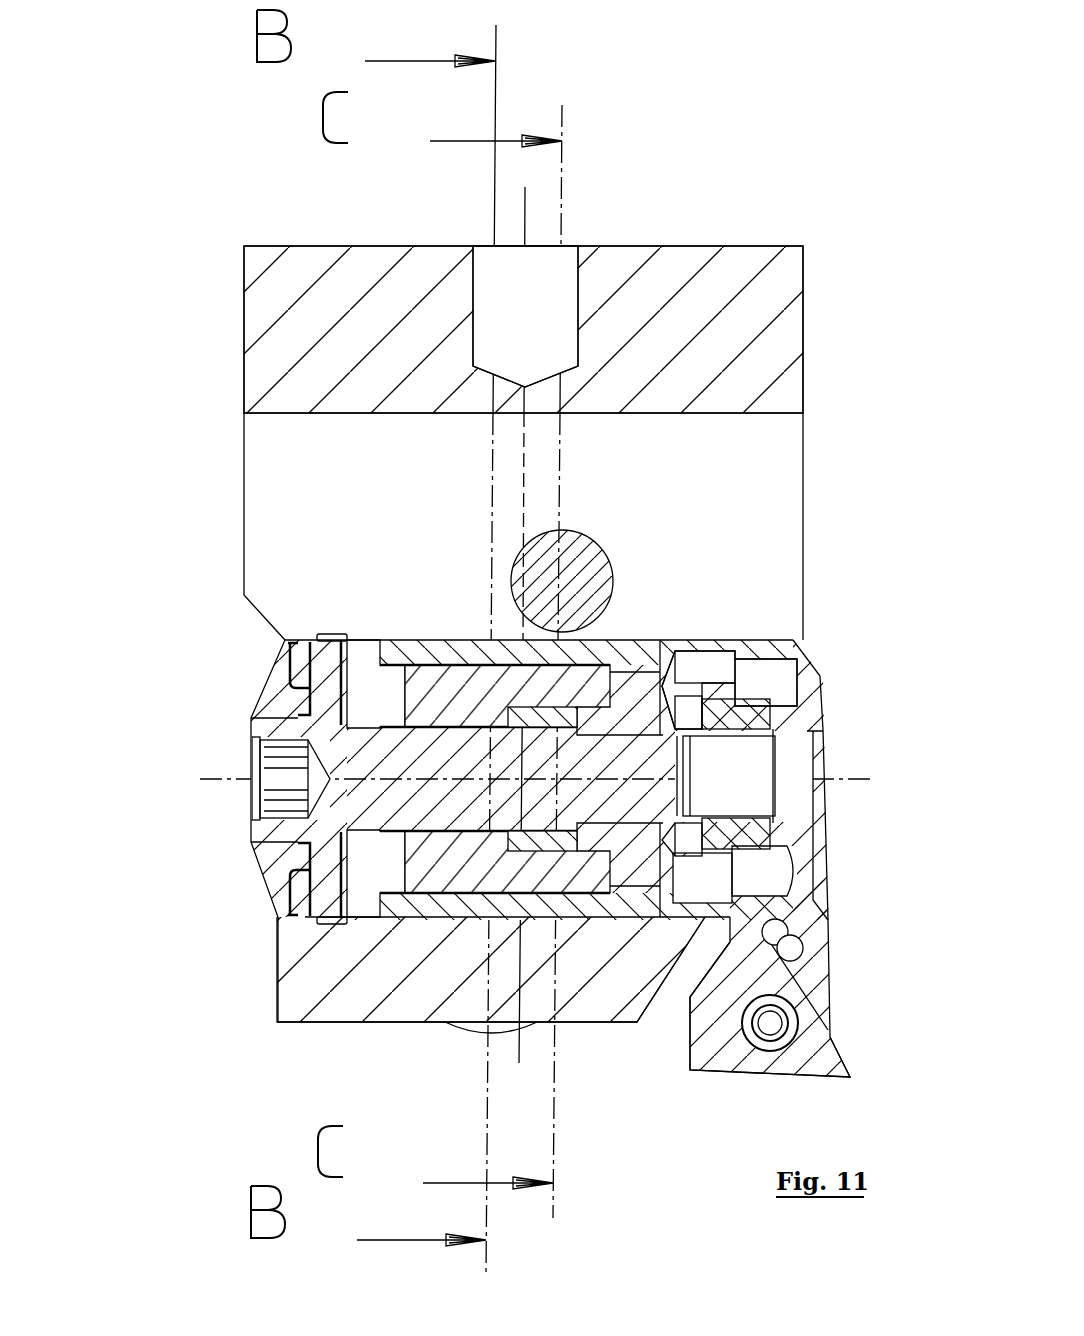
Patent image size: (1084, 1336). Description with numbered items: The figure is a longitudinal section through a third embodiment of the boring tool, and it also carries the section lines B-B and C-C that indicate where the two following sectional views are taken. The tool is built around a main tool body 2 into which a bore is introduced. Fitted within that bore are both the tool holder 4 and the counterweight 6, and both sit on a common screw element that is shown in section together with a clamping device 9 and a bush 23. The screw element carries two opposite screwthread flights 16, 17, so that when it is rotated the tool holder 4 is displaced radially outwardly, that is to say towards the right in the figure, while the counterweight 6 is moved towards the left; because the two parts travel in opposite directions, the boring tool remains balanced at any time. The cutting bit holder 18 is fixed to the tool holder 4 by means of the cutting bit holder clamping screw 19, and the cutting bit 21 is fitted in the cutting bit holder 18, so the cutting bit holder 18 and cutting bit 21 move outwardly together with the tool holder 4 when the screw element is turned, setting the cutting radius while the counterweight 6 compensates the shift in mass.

The main tool body 2 is at (244, 353).
The tool holder 4 is at (647, 648).
The counterweight 6 is at (420, 687).
The clamping device 9 is at (613, 568).
The screwthread flight 16 is at (292, 920).
The screwthread flight 17 is at (283, 1012).
The cutting bit holder 18 is at (813, 878).
The cutting bit holder clamping screw 19 is at (817, 733).
The cutting bit 21 is at (823, 1046).
The bush 23 is at (673, 692).